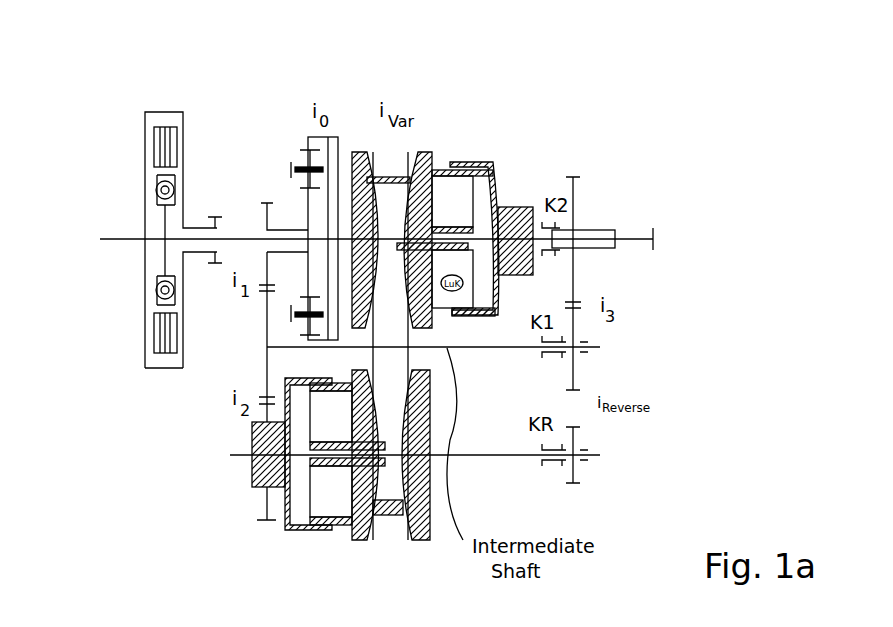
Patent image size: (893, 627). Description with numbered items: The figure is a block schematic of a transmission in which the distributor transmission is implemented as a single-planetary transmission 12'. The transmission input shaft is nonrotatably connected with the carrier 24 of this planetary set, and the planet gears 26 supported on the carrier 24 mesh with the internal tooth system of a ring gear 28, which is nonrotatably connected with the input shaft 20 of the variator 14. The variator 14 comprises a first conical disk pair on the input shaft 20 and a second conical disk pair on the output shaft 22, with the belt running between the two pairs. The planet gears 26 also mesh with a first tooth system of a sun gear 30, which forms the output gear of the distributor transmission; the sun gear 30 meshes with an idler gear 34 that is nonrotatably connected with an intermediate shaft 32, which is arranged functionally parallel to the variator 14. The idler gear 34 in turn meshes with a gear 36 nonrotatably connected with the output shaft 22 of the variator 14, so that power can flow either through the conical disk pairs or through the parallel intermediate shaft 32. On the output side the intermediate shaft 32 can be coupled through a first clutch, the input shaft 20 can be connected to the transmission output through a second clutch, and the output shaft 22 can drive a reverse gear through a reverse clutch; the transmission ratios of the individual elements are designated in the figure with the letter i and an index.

The single-planetary transmission 12' is at (366, 65).
The variator 14 is at (437, 136).
The input shaft 20 is at (527, 203).
The output shaft 22 is at (508, 455).
The carrier 24 is at (293, 167).
The planet gears 26 is at (337, 157).
The ring gear 28 is at (323, 347).
The sun gear 30 is at (303, 218).
The intermediate shaft 32 is at (508, 348).
The idler gear 34 is at (265, 337).
The gear 36 is at (262, 521).